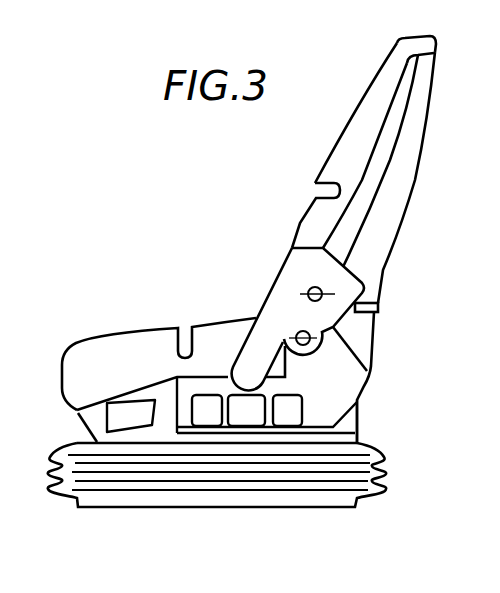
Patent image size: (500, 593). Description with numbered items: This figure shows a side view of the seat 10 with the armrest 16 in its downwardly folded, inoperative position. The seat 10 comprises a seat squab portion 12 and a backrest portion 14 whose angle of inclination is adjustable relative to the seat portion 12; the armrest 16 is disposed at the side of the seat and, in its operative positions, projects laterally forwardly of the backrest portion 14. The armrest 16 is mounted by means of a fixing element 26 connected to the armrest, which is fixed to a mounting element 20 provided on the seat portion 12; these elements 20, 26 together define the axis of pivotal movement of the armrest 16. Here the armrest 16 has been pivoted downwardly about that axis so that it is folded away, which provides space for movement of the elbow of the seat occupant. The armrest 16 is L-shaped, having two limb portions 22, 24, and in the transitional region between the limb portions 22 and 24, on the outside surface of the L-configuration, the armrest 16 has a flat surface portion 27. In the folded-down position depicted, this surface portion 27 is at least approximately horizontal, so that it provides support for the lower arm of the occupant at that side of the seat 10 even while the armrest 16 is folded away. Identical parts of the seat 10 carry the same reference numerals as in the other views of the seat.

The seat 10 is at (168, 257).
The seat squab portion 12 is at (125, 348).
The backrest portion 14 is at (393, 187).
The armrest 16 is at (278, 298).
The mounting element 20 is at (326, 289).
The limb portion 22 is at (273, 328).
The limb portion 24 is at (337, 310).
The fixing element 26 is at (299, 354).
The flat surface portion 27 is at (312, 245).